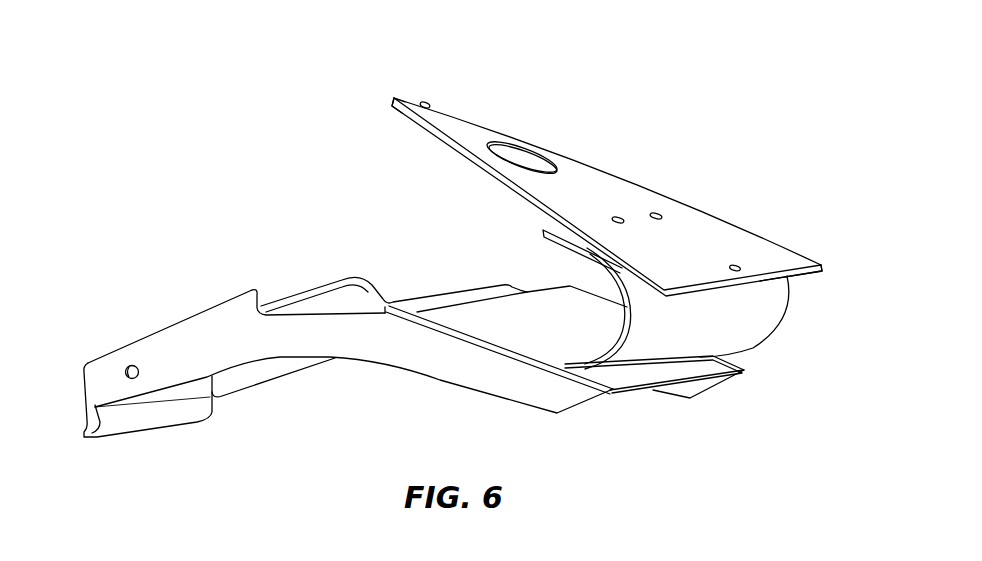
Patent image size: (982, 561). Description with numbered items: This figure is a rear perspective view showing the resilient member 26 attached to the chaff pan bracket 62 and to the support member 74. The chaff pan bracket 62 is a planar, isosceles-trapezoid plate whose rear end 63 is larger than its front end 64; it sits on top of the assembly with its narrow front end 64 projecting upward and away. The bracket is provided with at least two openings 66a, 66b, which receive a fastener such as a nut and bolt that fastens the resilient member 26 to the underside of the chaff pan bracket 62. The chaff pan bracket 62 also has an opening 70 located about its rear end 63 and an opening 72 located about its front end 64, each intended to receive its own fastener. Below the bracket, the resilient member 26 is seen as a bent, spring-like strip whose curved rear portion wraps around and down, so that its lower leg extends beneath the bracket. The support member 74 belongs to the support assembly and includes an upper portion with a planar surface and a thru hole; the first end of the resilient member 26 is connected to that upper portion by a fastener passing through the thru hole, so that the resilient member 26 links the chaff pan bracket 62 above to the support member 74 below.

The resilient member 26 is at (786, 319).
The chaff pan bracket 62 is at (604, 190).
The rear end 63 is at (799, 283).
The front end 64 is at (404, 96).
The opening 66a is at (619, 216).
The opening 66b is at (658, 213).
The opening 70 is at (737, 264).
The opening 72 is at (431, 103).
The support member 74 is at (588, 403).